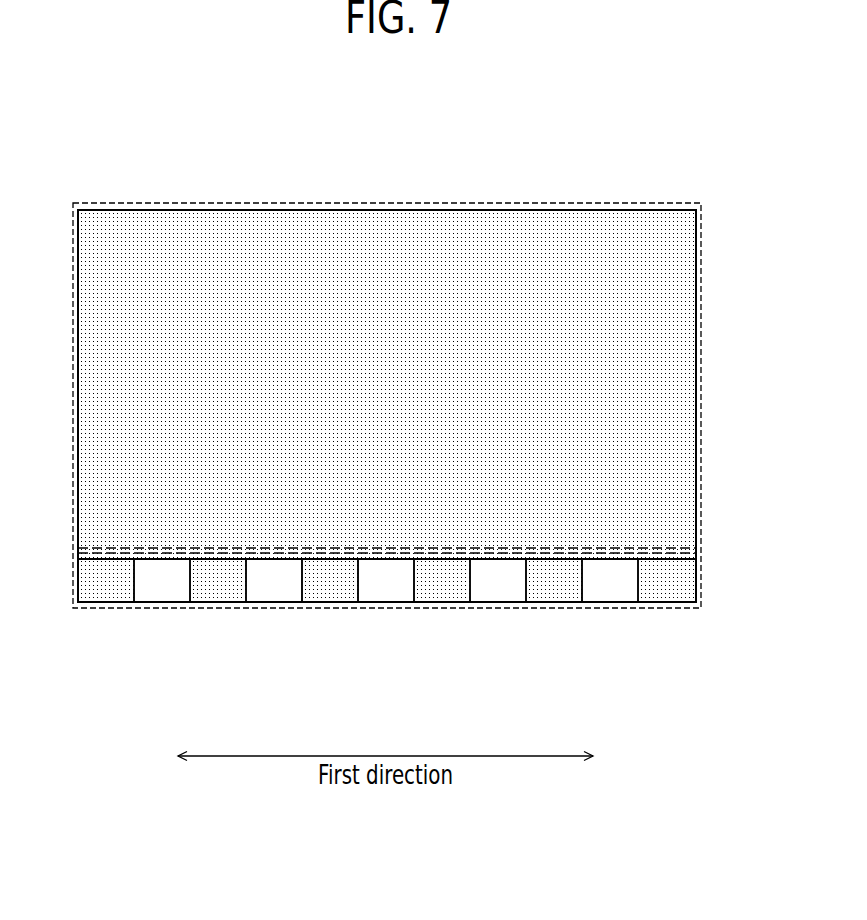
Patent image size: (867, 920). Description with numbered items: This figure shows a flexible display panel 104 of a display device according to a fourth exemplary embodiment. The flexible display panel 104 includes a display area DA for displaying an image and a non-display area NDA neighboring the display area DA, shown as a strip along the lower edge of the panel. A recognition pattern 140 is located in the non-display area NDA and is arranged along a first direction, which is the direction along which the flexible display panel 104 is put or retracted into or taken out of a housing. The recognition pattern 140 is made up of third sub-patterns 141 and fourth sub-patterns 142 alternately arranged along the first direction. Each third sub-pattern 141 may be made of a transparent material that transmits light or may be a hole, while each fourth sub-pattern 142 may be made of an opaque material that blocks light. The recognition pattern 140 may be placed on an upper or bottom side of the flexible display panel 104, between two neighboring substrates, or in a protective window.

The flexible display panel 104 is at (407, 142).
The display area DA is at (697, 395).
The non-display area NDA is at (697, 575).
The recognition pattern 140 is at (387, 641).
The third sub-pattern 141 is at (495, 583).
The fourth sub-pattern 142 is at (557, 583).